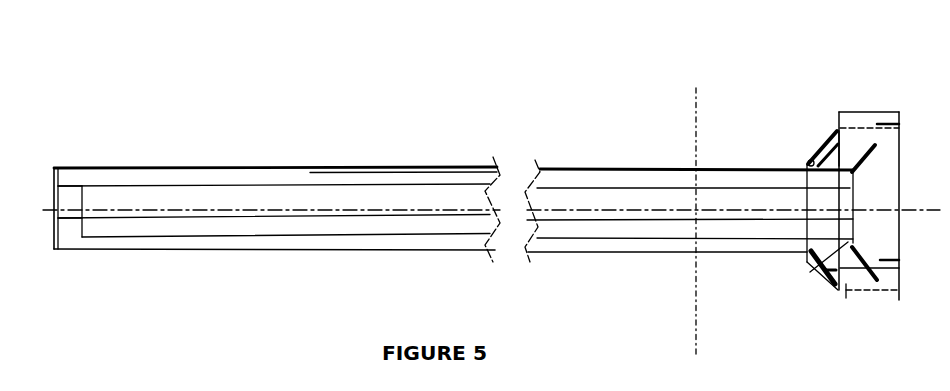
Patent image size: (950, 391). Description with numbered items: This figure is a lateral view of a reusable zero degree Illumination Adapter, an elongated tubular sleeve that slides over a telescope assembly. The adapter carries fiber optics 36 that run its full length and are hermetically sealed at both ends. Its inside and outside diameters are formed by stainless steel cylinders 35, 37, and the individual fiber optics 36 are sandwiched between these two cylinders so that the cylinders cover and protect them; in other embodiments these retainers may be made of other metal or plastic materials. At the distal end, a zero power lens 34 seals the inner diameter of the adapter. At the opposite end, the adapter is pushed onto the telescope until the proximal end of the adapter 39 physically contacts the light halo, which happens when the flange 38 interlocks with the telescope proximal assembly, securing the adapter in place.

The zero power lens 34 is at (62, 210).
The stainless steel cylinder 35 is at (200, 167).
The fiber optics 36 is at (348, 178).
The stainless steel cylinder 37 is at (620, 187).
The flange 38 is at (828, 138).
The proximal end of the adapter 39 is at (848, 242).